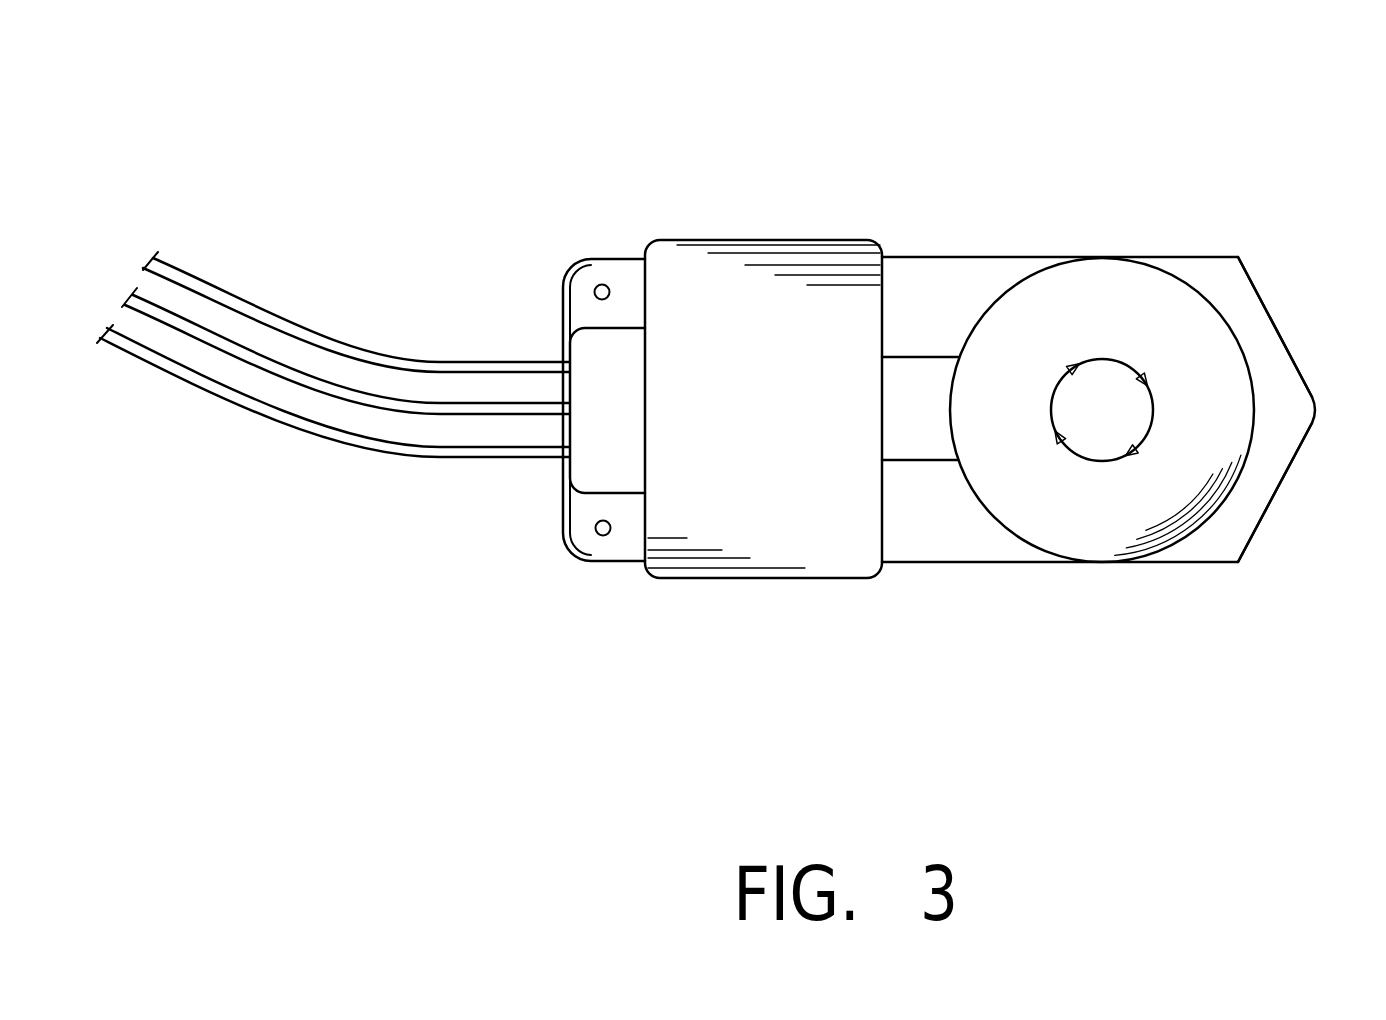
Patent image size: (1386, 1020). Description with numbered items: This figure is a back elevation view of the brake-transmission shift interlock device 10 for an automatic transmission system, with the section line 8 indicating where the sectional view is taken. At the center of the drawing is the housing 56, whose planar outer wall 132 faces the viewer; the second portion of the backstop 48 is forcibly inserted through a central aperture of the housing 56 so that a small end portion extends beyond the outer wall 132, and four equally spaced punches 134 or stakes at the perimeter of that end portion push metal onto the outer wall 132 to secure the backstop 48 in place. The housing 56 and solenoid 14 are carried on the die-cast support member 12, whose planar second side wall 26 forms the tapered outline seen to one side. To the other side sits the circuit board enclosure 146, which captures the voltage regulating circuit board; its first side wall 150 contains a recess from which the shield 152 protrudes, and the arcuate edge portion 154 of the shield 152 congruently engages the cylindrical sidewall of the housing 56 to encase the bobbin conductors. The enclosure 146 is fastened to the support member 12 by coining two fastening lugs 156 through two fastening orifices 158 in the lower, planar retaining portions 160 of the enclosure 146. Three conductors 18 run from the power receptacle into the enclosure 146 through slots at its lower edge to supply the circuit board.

The section line 8- 8 is at (1096, 160).
The brake-transmission shift interlock device 10 is at (1090, 620).
The support member 12 is at (1269, 508).
The solenoid 14 is at (1254, 413).
The conductors 18 is at (327, 387).
The second side wall 26 is at (1271, 367).
The backstop 48 is at (1103, 408).
The housing 56 is at (1103, 565).
The planar outer wall 132 is at (1098, 280).
The punches 134 is at (1077, 362).
The circuit board enclosure 146 is at (826, 562).
The first side wall 150 is at (879, 305).
The shield 152 is at (910, 438).
The arcuate edge portion 154 is at (952, 393).
The fastening lugs 156 is at (592, 287).
The fastening orifices 158 is at (594, 296).
The retaining portions 160 is at (631, 278).